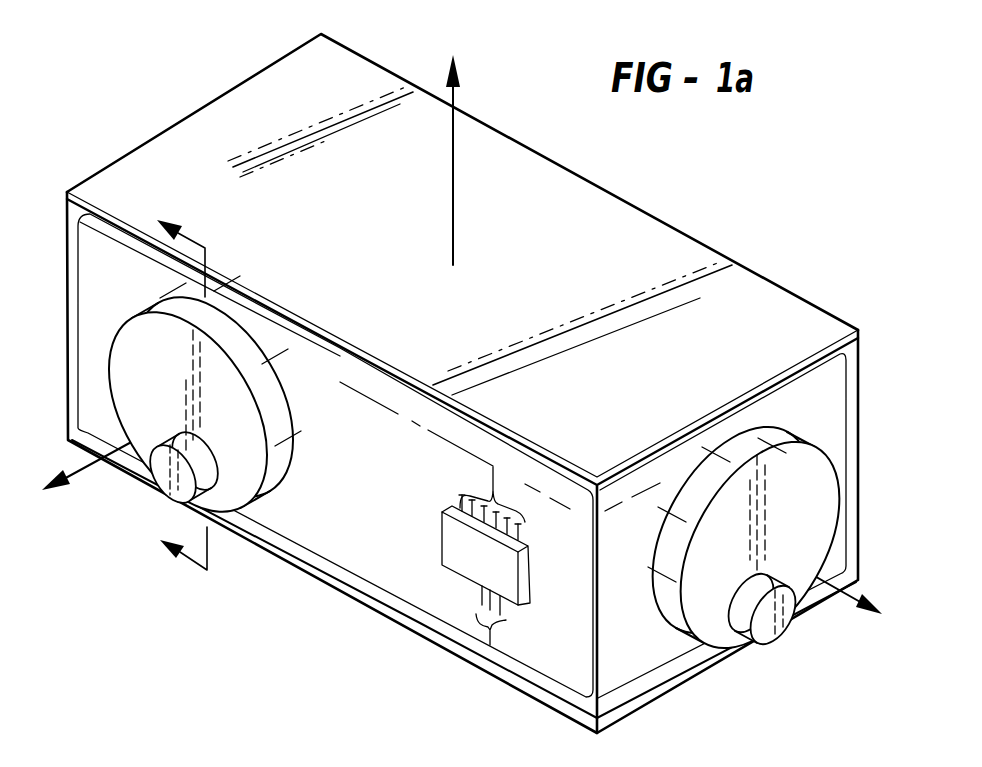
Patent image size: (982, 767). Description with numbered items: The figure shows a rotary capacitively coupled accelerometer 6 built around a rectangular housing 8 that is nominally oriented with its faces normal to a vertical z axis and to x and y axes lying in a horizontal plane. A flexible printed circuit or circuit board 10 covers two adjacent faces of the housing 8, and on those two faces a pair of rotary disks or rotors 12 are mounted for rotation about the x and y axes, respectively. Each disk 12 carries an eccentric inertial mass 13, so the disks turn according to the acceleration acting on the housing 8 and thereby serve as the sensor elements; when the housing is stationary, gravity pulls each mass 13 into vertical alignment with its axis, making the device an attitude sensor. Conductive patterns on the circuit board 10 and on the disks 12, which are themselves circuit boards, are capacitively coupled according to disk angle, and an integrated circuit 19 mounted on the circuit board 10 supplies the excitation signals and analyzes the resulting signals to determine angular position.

The rotary capacitively coupled accelerometer 6 is at (700, 206).
The rectangular housing 8 is at (230, 133).
The circuit board 10 is at (90, 233).
The rotary disks 12 is at (130, 353).
The eccentric inertial mass 13 is at (165, 493).
The integrated circuit 19 is at (450, 540).